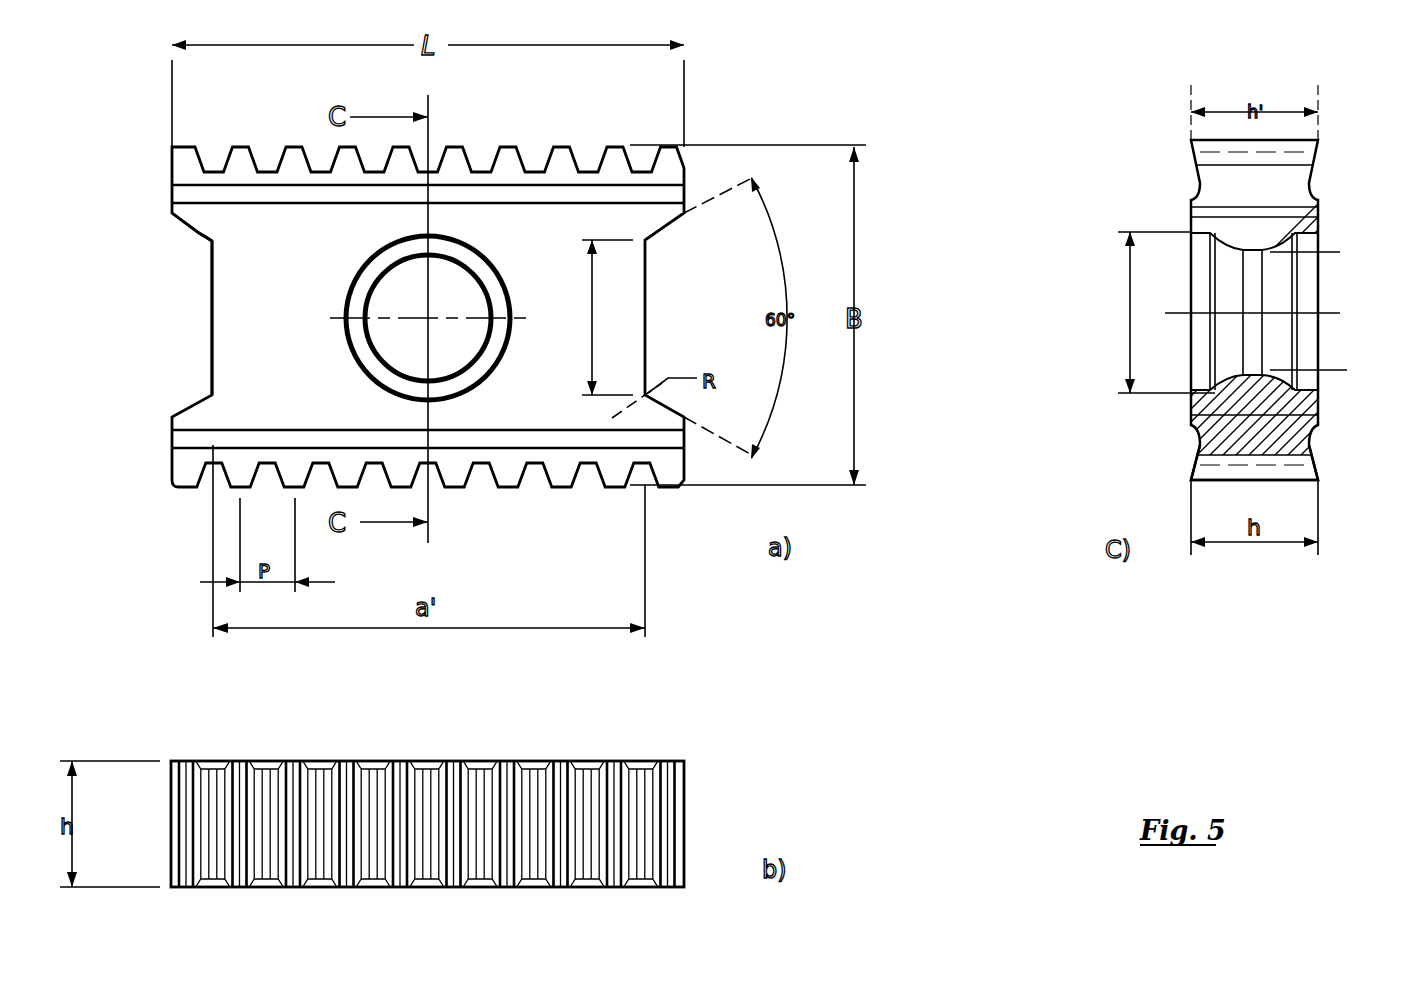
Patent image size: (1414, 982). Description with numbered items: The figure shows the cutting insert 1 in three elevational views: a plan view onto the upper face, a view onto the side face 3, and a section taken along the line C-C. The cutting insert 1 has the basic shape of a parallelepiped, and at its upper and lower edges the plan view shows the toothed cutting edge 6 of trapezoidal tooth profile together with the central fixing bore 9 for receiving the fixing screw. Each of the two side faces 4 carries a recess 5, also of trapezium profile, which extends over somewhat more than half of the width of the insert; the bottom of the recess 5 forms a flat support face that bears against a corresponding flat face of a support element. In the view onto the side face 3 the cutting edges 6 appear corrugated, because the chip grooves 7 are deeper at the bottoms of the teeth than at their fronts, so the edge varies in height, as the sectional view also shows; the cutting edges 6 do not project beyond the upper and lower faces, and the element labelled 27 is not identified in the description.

The cutting insert 1 is at (1163, 433).
The side face 3 is at (616, 822).
The side face 4 is at (170, 440).
The recess 5 is at (197, 362).
The cutting edge 6 is at (504, 150).
The chip groove 7 is at (1318, 445).
The fixing bore 9 is at (1282, 340).
The shoulder step 27 is at (197, 233).